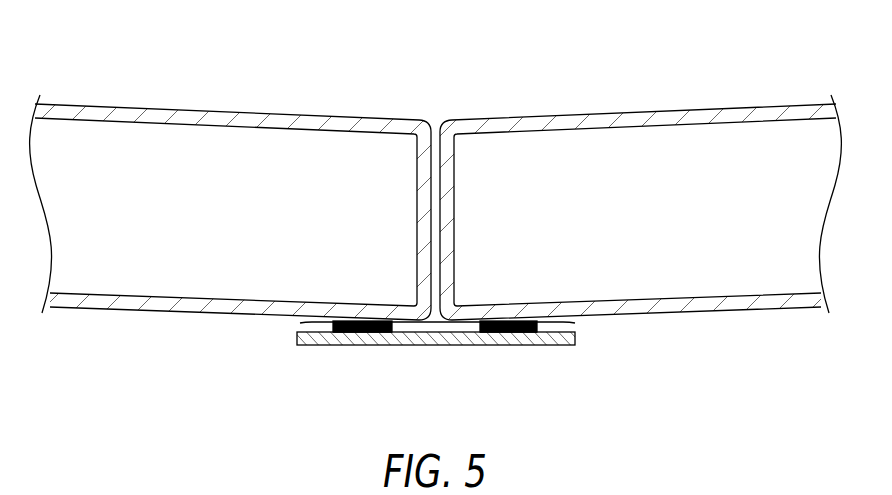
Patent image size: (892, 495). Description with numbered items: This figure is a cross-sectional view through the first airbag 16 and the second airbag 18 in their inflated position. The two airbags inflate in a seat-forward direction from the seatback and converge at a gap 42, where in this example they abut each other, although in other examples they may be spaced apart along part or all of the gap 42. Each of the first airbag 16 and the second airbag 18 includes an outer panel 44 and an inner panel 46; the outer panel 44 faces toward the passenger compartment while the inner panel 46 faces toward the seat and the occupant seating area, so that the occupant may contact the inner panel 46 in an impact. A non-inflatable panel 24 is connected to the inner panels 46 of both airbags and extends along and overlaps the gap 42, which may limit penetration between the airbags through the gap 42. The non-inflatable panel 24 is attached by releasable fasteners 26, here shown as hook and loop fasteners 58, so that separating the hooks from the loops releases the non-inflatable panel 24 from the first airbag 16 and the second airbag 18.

The first airbag 16 is at (188, 113).
The second airbag 18 is at (680, 112).
The non-inflatable panel 24 is at (563, 346).
The releasable fastener 26 is at (358, 333).
The gap 42 is at (435, 114).
The outer panel 44 is at (277, 125).
The inner panel 46 is at (163, 303).
The hook and loop fasteners 58 is at (300, 323).